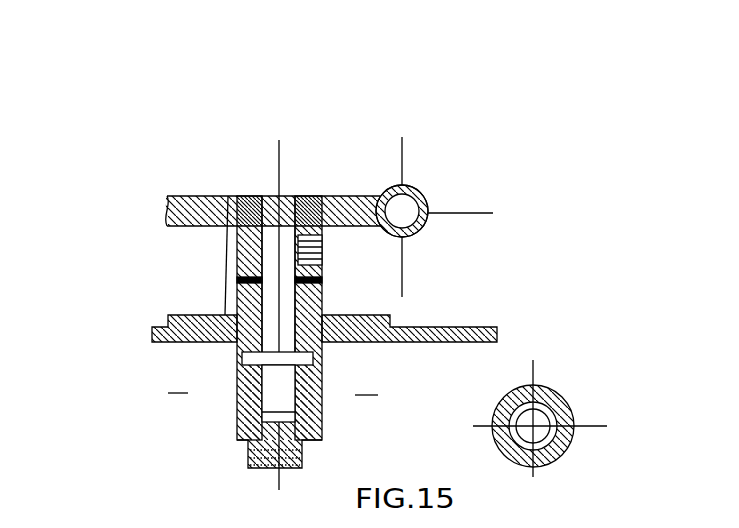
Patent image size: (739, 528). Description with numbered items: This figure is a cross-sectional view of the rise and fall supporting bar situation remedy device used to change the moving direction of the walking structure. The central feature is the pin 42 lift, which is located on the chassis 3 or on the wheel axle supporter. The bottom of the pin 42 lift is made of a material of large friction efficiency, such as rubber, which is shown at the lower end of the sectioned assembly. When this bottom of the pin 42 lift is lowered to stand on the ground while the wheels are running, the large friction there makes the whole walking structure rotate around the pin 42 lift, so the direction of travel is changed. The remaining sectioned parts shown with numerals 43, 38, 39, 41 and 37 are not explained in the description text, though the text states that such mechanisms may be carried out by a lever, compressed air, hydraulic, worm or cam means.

The nut 43 is at (236, 425).
The upper plate 38 is at (188, 199).
The chassis 3 is at (228, 196).
The bolt 39 is at (288, 245).
The thread 41 is at (330, 250).
The bushing 37 is at (417, 200).
The pin lift 42 is at (388, 327).